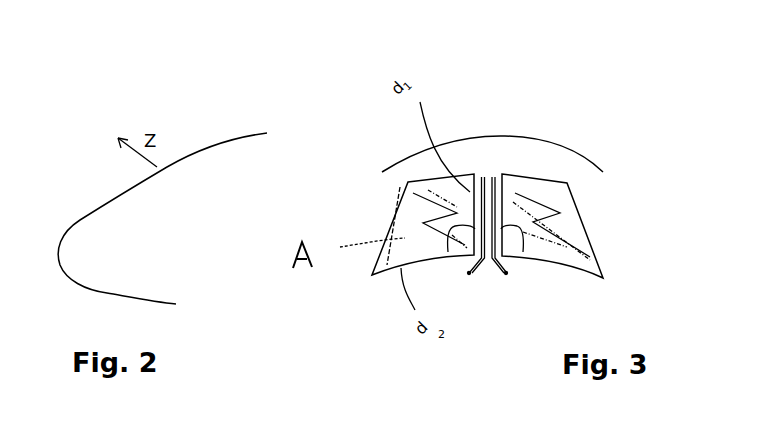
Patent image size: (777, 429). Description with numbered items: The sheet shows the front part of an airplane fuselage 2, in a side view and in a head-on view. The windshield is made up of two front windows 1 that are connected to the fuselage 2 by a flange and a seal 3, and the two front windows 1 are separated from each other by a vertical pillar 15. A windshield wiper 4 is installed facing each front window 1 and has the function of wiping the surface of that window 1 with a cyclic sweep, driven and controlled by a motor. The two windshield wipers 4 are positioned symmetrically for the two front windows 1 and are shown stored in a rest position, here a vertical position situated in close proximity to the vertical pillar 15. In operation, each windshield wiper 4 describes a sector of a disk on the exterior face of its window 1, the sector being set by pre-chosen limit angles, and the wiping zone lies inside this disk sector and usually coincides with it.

In FIG. 2, the front window 1 is at (242, 135).
In FIG. 3, the front window 1 is at (388, 220).
In FIG. 2, the fuselage 2 is at (167, 176).
In FIG. 3, the fuselage 2 is at (513, 157).
In FIG. 3, the seal 3 is at (582, 207).
In FIG. 3, the windshield wiper 4 is at (448, 252).
In FIG. 3, the vertical pillar 15 is at (487, 173).